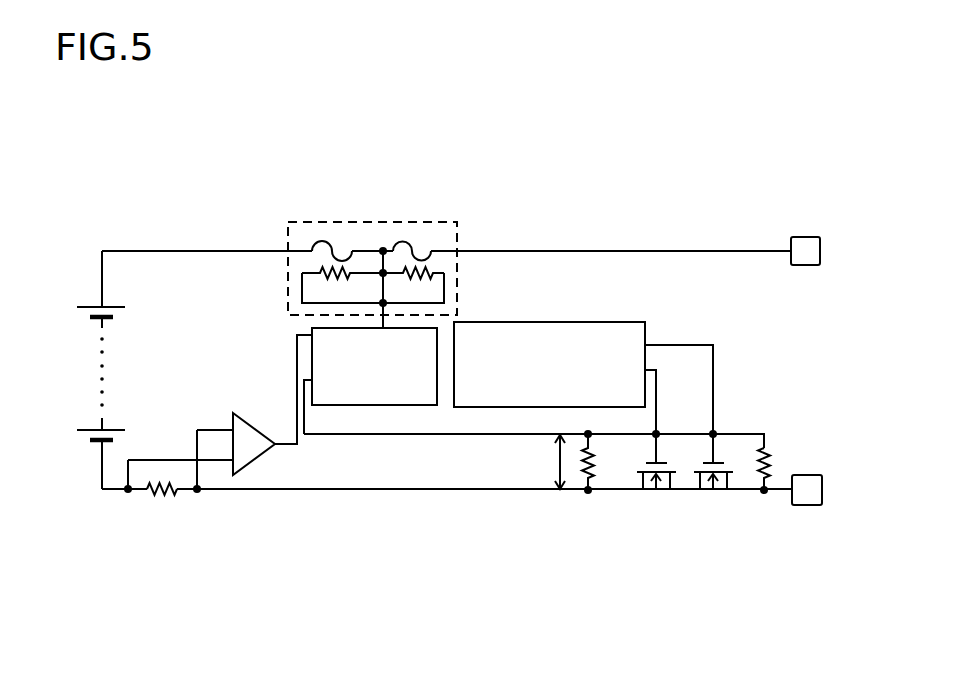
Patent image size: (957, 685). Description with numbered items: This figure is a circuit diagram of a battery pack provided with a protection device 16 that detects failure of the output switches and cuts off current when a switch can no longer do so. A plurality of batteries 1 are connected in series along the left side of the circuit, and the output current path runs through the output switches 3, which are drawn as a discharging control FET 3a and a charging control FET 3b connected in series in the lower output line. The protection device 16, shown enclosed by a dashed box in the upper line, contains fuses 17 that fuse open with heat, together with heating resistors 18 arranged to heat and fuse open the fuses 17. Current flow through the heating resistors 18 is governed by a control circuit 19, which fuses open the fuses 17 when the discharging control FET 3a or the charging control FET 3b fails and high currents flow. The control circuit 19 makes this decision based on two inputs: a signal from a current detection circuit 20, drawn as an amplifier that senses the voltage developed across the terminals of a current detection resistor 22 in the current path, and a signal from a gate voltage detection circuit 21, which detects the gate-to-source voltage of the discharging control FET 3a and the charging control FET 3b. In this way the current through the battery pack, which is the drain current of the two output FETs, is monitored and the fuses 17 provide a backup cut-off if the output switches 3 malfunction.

The battery 1 is at (90, 307).
The protection device 16 is at (382, 217).
The fuse 17 is at (340, 237).
The heating resistor 18 is at (320, 272).
The control circuit 19 is at (380, 405).
The current detection circuit 20 is at (225, 389).
The gate voltage detection circuit 21 is at (622, 322).
The current detection resistor 22 is at (165, 495).
The output switch 3 is at (685, 553).
The discharging control FET 3a is at (654, 511).
The charging control FET 3b is at (742, 528).